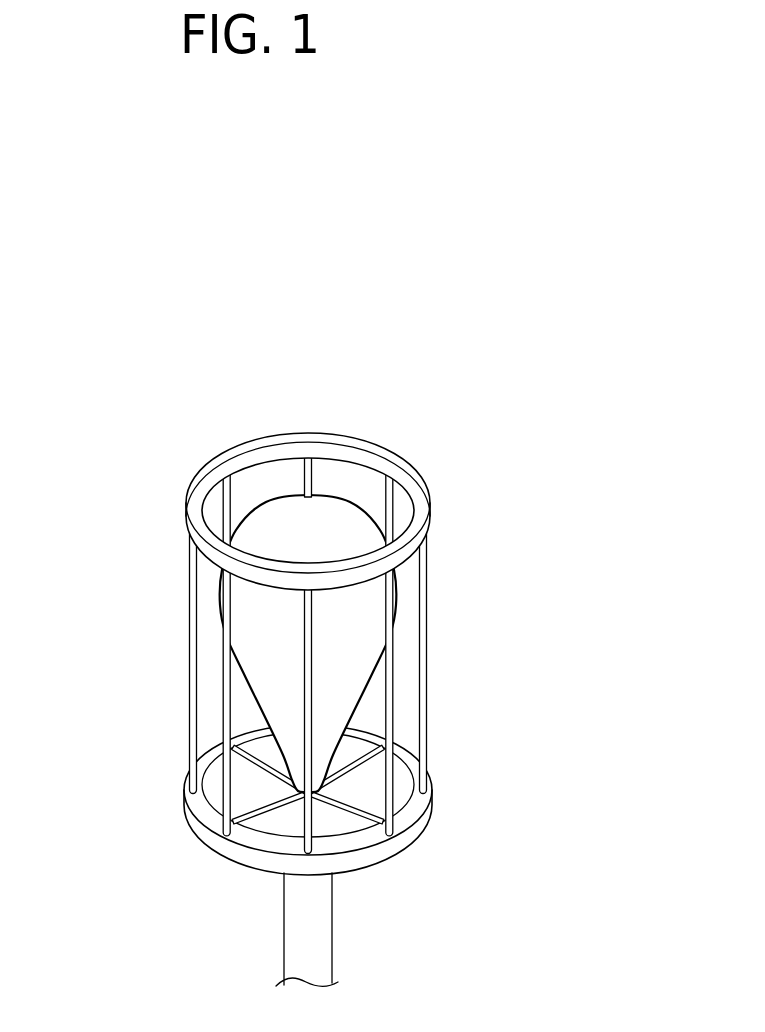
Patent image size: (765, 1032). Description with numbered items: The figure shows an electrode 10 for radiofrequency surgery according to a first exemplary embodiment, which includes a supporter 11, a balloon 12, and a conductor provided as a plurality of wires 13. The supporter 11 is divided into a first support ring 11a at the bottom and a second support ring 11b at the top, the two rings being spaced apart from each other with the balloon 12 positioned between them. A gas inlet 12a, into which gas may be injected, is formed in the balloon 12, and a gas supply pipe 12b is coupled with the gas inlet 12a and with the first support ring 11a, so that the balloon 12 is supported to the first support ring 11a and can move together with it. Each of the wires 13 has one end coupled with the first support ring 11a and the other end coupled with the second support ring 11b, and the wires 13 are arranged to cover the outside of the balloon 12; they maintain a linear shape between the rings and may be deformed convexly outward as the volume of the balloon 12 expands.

The electrode for radiofrequency surgery 10 is at (361, 643).
The supporter 11 is at (361, 651).
The first support ring 11a is at (417, 822).
The second support ring 11b is at (390, 511).
The balloon 12 is at (280, 530).
The gas inlet 12a is at (317, 800).
The gas supply pipe 12b is at (293, 905).
The plurality of wires 13 is at (192, 620).